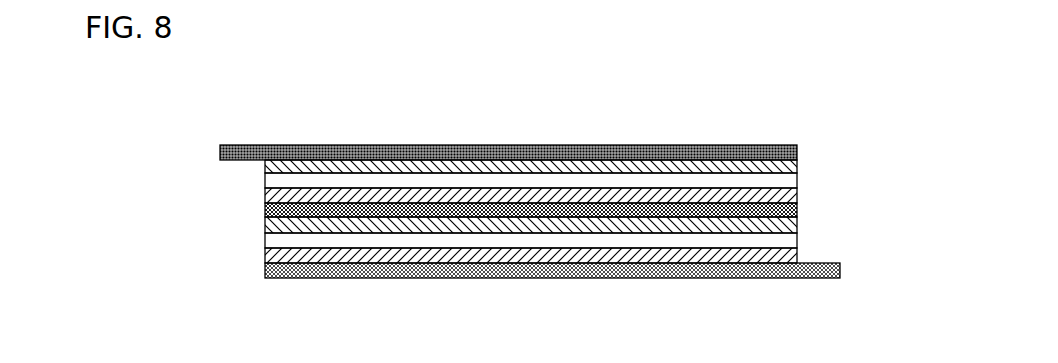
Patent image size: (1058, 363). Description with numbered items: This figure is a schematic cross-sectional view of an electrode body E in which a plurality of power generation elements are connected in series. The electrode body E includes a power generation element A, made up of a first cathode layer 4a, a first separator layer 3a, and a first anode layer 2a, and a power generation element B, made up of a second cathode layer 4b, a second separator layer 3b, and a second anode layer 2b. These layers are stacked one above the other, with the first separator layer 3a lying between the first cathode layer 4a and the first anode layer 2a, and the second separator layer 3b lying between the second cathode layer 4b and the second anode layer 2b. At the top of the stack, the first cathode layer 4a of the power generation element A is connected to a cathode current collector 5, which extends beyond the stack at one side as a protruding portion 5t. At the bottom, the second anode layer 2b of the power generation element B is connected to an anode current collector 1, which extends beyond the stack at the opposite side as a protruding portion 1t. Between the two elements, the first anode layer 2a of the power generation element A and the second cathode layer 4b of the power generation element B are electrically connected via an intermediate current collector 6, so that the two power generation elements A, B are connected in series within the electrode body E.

The electrode body E is at (778, 100).
The cathode current collector 5 is at (529, 152).
The protruding end of upper protective layer 5t is at (233, 152).
The power generation element A is at (878, 145).
The first cathode layer 4a is at (789, 165).
The first separator layer 3a is at (789, 183).
The first anode layer 2a is at (789, 198).
The intermediate current collector 6 is at (790, 210).
The power generation element B is at (182, 218).
The second cathode layer 4b is at (273, 227).
The second separator layer 3b is at (273, 240).
The second anode layer 2b is at (273, 255).
The anode current collector 1 is at (531, 268).
The protruding end of base layer 1t is at (827, 270).